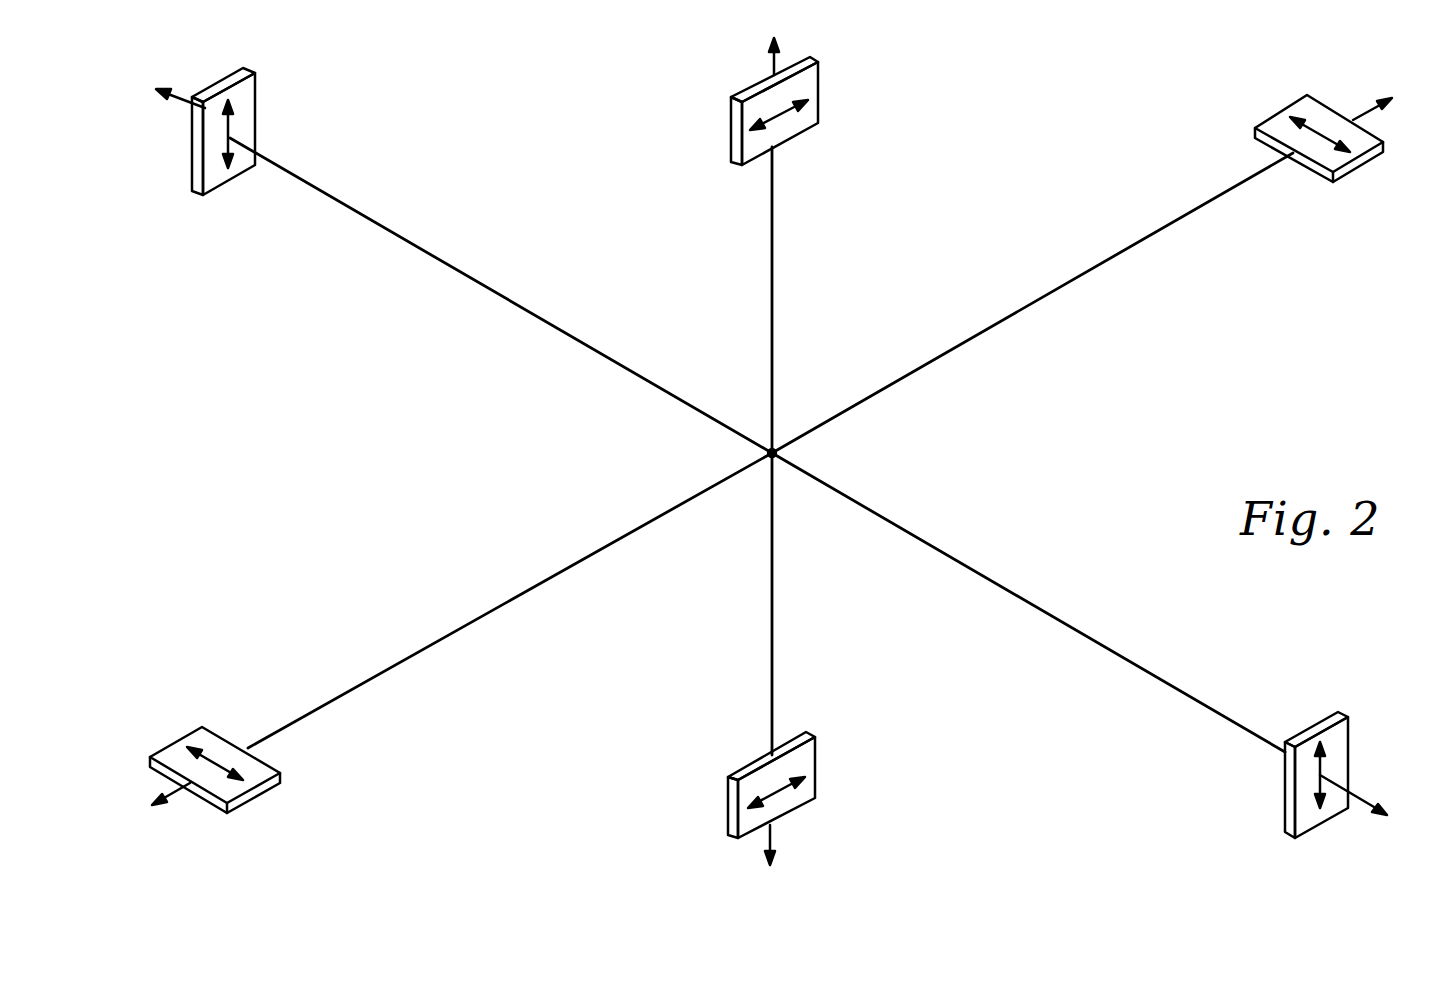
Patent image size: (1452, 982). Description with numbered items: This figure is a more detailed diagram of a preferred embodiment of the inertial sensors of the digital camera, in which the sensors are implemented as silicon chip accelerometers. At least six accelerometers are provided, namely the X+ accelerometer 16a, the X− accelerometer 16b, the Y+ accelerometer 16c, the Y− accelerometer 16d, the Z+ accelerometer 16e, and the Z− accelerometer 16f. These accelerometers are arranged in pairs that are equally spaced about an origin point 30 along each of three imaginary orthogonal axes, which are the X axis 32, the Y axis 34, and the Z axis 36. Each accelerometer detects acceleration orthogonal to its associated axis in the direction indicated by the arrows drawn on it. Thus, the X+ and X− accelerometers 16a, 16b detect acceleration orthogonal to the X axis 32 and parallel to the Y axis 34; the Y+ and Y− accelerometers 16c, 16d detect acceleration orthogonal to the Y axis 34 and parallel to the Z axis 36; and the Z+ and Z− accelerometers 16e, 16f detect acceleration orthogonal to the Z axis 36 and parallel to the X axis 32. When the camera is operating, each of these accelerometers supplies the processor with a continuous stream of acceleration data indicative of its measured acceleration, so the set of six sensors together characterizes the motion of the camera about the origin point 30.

The X+ accelerometer 16a is at (1337, 747).
The X− accelerometer 16b is at (245, 105).
The Y+ accelerometer 16c is at (1360, 162).
The Y− accelerometer 16d is at (253, 793).
The Z+ accelerometer 16e is at (810, 110).
The Z− accelerometer 16f is at (805, 787).
The origin point 30 is at (776, 455).
The X axis 32 is at (512, 603).
The Y axis 34 is at (773, 605).
The Z axis 36 is at (1030, 602).